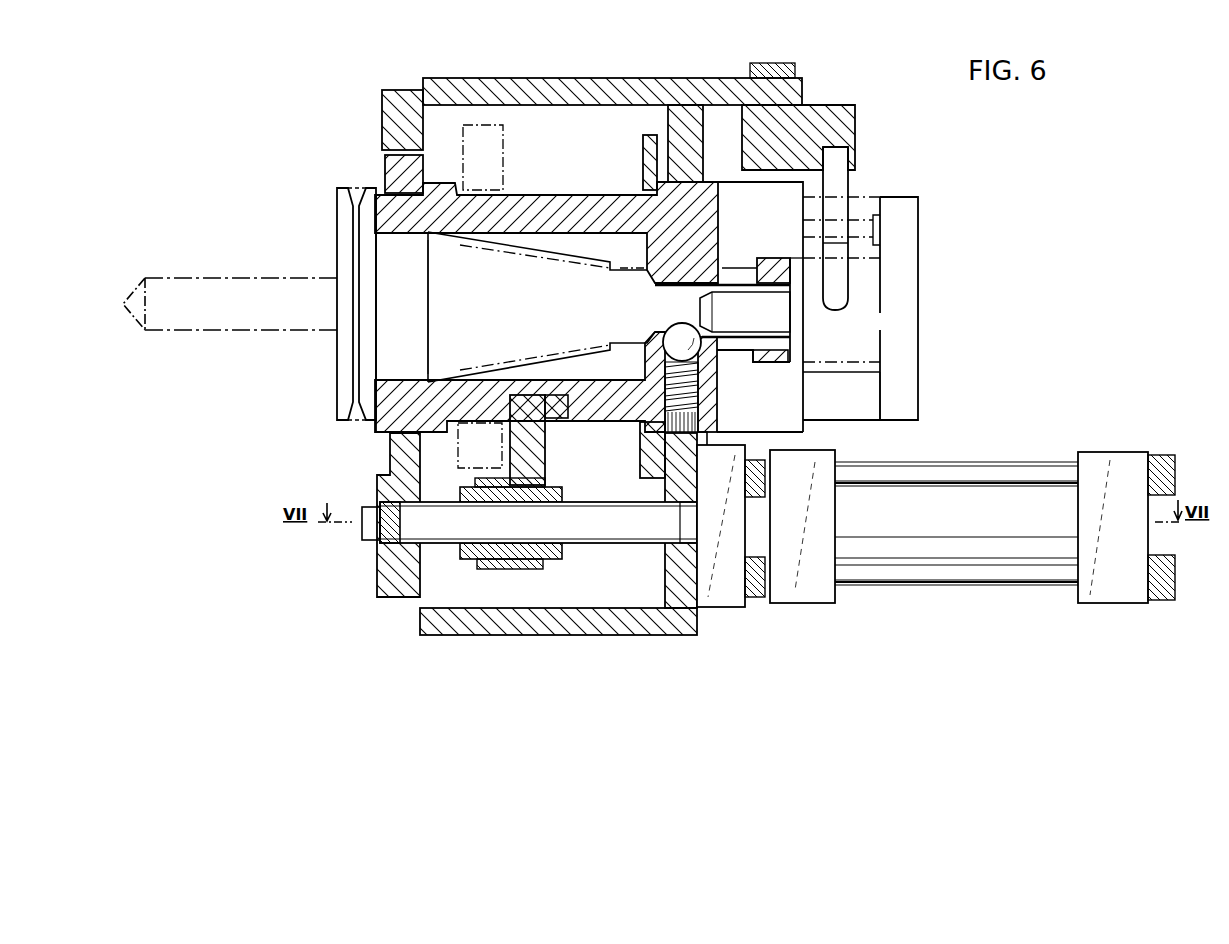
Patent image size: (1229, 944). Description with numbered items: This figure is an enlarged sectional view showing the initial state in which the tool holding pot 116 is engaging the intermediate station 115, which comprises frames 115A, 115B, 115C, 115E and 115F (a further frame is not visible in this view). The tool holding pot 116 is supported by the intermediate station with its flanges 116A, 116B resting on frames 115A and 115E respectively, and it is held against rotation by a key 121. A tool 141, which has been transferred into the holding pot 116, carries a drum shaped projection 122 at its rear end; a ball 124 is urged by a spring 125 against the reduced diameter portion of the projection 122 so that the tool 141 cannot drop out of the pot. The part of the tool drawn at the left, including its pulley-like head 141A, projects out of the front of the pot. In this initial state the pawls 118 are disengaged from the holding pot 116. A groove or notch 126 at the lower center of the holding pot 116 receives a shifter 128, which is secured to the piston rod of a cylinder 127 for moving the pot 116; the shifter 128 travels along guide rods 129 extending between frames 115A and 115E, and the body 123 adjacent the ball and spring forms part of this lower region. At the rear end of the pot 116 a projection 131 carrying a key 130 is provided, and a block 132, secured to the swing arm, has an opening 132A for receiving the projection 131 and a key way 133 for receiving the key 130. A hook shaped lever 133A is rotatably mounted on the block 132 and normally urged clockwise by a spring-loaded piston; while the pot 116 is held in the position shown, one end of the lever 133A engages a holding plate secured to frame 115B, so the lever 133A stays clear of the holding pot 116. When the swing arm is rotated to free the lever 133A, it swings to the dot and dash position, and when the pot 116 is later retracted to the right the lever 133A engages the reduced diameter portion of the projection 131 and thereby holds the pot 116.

The intermediate station 115 is at (587, 354).
The frame 115A is at (399, 88).
The frame 115B is at (626, 80).
The frame 115C is at (855, 120).
The frame 115E is at (688, 583).
The frame 115F is at (596, 625).
The tool holding pot 116 is at (526, 240).
The flange 116A is at (378, 432).
The flange 116B is at (692, 187).
The pawls 118 is at (493, 125).
The key 121 is at (382, 162).
The drum shaped projection 122 is at (687, 308).
The locking body 123 is at (657, 405).
The ball 124 is at (672, 328).
The spring 125 is at (702, 419).
The groove or notch 126 is at (557, 398).
The cylinder 127 is at (957, 550).
The shifter 128 is at (540, 465).
The guide rods 129 is at (598, 532).
The key 130 is at (777, 364).
The projection 131 is at (748, 268).
The block 132 is at (863, 400).
The opening 132A is at (860, 298).
The key way 133 is at (862, 368).
The hook shaped lever 133A is at (840, 180).
The tool 141 is at (208, 315).
The pulley 141A is at (392, 277).